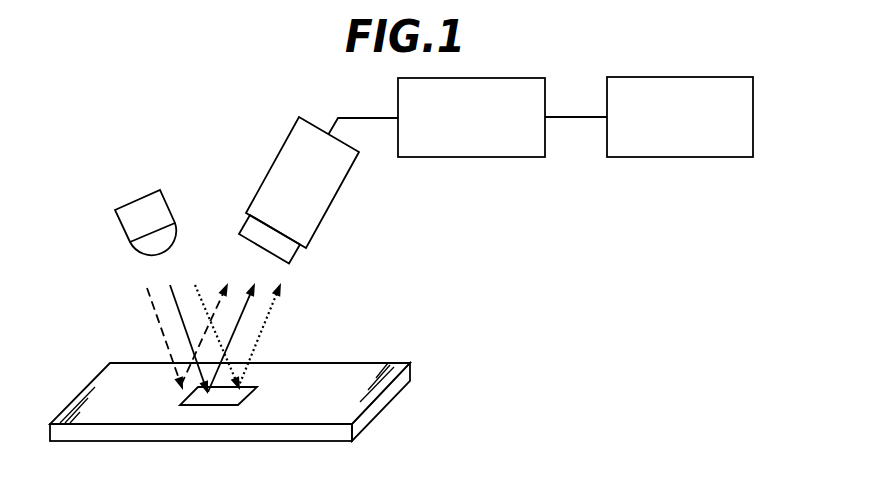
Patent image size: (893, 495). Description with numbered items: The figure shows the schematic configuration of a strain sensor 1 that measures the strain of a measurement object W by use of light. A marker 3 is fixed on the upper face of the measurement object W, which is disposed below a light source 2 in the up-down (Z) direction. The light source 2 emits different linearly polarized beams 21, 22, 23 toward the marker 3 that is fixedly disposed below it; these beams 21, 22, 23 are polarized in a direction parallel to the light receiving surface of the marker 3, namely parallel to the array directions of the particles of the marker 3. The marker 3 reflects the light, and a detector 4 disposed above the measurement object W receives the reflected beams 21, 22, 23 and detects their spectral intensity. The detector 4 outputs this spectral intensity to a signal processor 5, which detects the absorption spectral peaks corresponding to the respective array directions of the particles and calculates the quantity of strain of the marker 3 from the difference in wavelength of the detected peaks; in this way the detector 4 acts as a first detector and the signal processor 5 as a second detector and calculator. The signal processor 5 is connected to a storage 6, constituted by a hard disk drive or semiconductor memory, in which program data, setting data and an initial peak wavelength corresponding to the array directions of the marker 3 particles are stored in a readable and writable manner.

The strain sensor 1 is at (63, 218).
The light source 2 is at (162, 193).
The marker 3 is at (218, 398).
The detector 4 is at (328, 197).
The signal processor 5 is at (497, 80).
The storage 6 is at (705, 80).
The linearly polarized beam 21 is at (145, 290).
The linearly polarized beam 22 is at (173, 286).
The linearly polarized beam 23 is at (200, 285).
The measurement object W is at (377, 387).